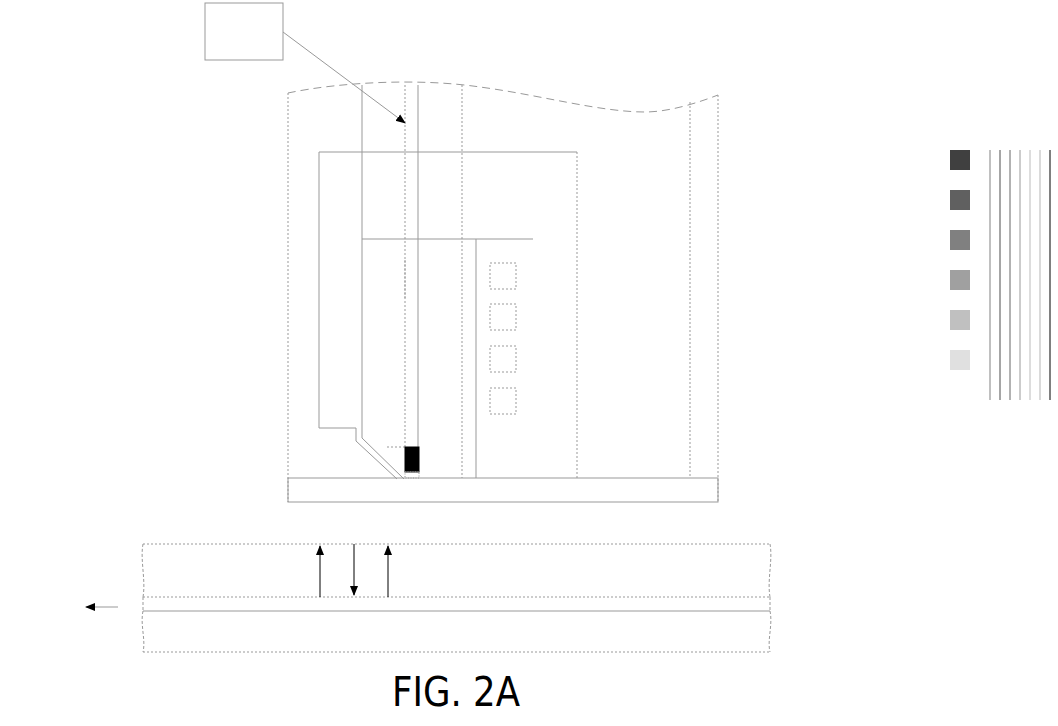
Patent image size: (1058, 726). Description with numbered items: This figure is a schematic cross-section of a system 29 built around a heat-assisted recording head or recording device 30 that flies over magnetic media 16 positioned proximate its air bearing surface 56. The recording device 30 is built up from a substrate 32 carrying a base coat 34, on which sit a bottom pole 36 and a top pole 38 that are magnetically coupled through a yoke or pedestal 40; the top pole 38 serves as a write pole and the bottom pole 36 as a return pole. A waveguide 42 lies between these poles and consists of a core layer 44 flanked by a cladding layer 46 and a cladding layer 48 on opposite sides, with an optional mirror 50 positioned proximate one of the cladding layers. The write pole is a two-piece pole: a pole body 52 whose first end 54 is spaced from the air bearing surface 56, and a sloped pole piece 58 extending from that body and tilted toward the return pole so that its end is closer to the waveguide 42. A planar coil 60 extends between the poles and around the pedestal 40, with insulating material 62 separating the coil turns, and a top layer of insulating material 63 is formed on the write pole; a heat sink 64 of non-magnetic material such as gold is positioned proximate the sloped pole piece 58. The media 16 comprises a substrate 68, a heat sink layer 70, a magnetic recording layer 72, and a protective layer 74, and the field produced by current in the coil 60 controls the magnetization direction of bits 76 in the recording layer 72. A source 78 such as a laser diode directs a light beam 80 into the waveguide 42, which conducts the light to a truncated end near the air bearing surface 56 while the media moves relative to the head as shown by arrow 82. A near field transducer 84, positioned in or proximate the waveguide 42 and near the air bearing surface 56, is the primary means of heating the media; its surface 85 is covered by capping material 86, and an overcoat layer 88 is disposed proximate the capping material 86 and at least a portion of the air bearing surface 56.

The magnetic media 16 is at (778, 511).
The system 29 is at (750, 119).
The recording device 30 is at (189, 105).
The substrate 32 is at (704, 110).
The base coat 34 is at (630, 110).
The bottom pole 36 is at (577, 440).
The top pole 38 is at (362, 278).
The pedestal 40 is at (505, 143).
The waveguide 42 is at (462, 75).
The core layer 44 is at (405, 281).
The cladding layer 46 is at (449, 237).
The cladding layer 48 is at (392, 237).
The mirror 50 is at (470, 238).
The pole body 52 is at (317, 347).
The first end 54 is at (332, 429).
The air bearing surface 56 is at (300, 522).
The sloped pole piece 58 is at (367, 456).
The planar coil 60 is at (505, 258).
The insulating material 62 is at (533, 425).
The top layer of insulating material 63 is at (287, 187).
The heat sink 64 is at (392, 446).
The substrate 68 is at (770, 632).
The heat sink layer 70 is at (770, 597).
The magnetic recording layer 72 is at (770, 550).
The protective layer 74 is at (655, 544).
The bits 76 is at (392, 580).
The source 78 is at (205, 22).
The light beam 80 is at (322, 52).
The arrow 82 is at (105, 608).
The near field transducer 84 is at (419, 447).
The surface 85 is at (420, 472).
The capping material 86 is at (412, 482).
The overcoat layer 88 is at (287, 493).